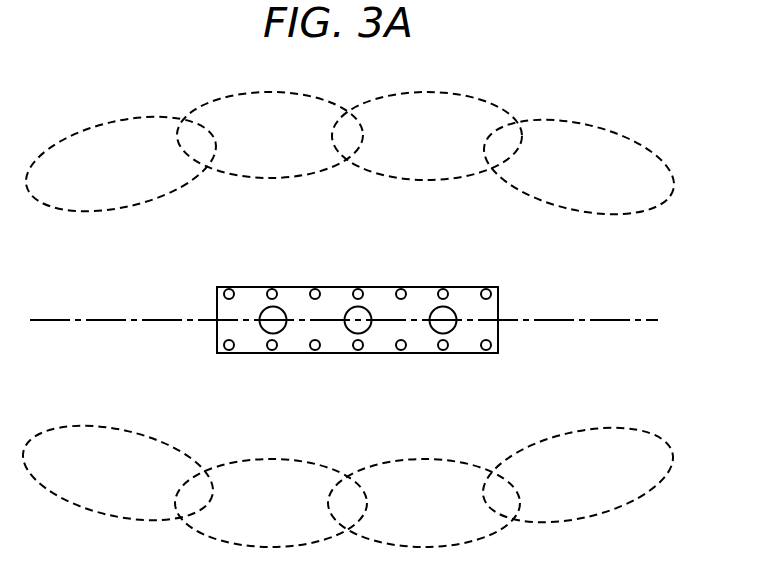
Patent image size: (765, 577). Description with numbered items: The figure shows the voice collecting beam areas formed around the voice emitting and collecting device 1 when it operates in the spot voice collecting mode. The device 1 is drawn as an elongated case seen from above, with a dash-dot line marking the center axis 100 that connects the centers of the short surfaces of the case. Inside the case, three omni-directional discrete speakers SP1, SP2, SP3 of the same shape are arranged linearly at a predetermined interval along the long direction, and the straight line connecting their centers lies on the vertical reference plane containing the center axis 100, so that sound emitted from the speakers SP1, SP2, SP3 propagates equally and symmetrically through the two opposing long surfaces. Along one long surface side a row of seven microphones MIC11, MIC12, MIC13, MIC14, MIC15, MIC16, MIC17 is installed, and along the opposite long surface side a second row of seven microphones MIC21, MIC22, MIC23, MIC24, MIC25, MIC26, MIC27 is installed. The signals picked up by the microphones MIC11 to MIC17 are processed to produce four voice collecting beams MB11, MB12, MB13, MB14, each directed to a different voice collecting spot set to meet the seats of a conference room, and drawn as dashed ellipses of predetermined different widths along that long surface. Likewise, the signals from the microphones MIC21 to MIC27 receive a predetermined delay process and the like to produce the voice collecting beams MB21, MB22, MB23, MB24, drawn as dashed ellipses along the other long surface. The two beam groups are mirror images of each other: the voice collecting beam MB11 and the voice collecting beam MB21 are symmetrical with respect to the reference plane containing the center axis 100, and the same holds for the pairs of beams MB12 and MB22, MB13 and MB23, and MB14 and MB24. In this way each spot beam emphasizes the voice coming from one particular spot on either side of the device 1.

The voice emitting and collecting device 1 is at (514, 307).
The center axis 100 is at (630, 318).
The discrete speaker SP1 is at (263, 311).
The discrete speaker SP2 is at (371, 315).
The discrete speaker SP3 is at (454, 330).
The microphone MIC11 is at (232, 352).
The microphone MIC12 is at (274, 352).
The microphone MIC13 is at (317, 352).
The microphone MIC14 is at (360, 352).
The microphone MIC15 is at (403, 352).
The microphone MIC16 is at (445, 352).
The microphone MIC17 is at (488, 352).
The microphone MIC21 is at (247, 271).
The microphone MIC22 is at (275, 288).
The microphone MIC23 is at (331, 271).
The microphone MIC24 is at (361, 288).
The microphone MIC25 is at (403, 288).
The microphone MIC26 is at (446, 288).
The microphone MIC27 is at (488, 288).
The voice collecting beam MB11 is at (118, 472).
The voice collecting beam MB12 is at (271, 503).
The voice collecting beam MB13 is at (424, 503).
The voice collecting beam MB14 is at (578, 474).
The voice collecting beam MB21 is at (121, 163).
The voice collecting beam MB22 is at (270, 135).
The voice collecting beam MB23 is at (427, 136).
The voice collecting beam MB24 is at (579, 166).